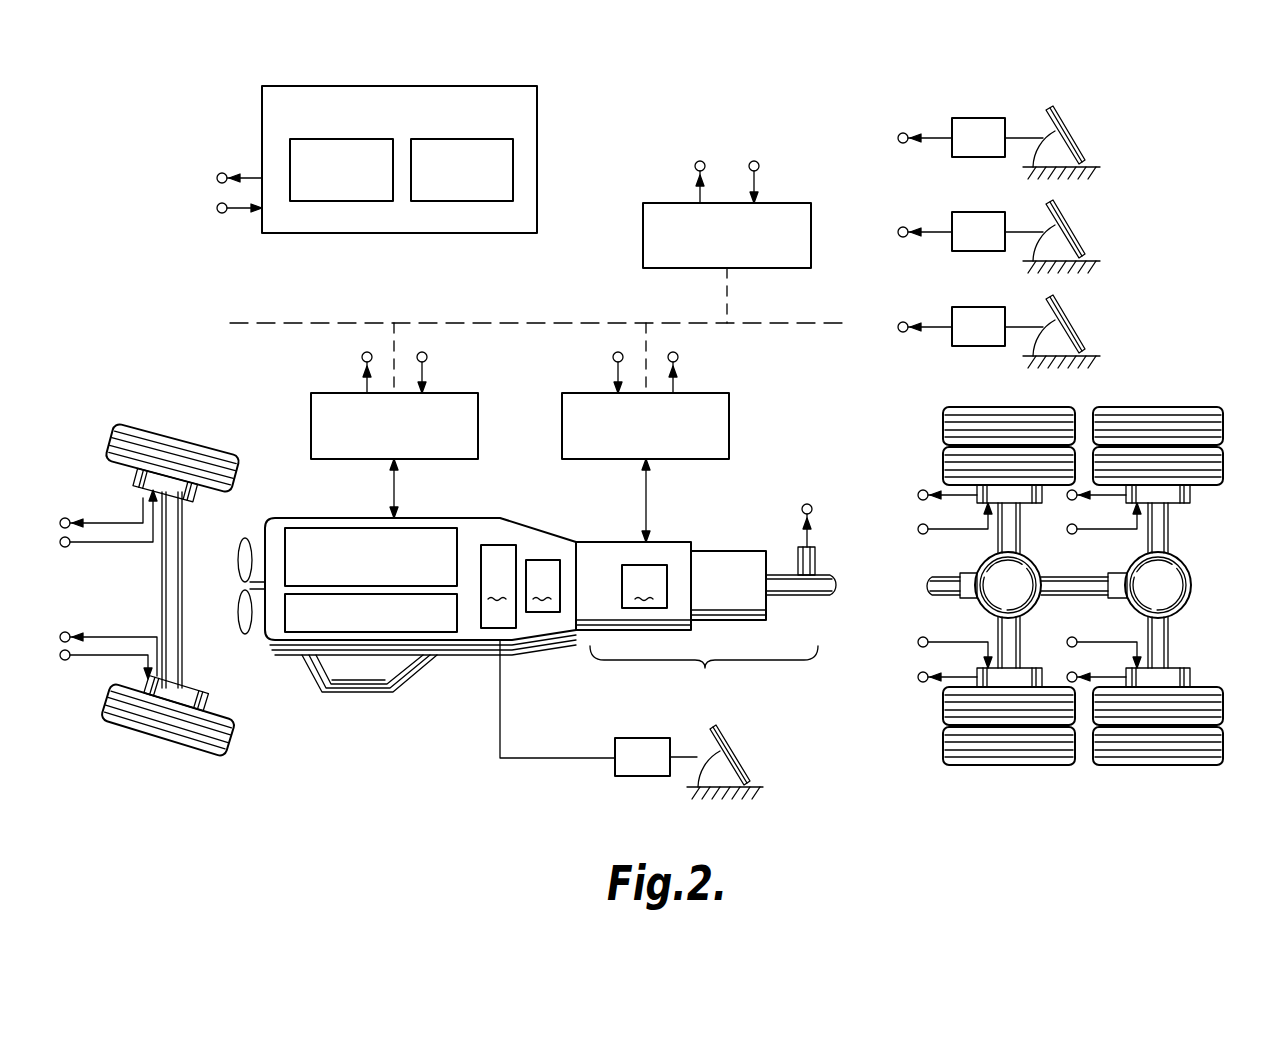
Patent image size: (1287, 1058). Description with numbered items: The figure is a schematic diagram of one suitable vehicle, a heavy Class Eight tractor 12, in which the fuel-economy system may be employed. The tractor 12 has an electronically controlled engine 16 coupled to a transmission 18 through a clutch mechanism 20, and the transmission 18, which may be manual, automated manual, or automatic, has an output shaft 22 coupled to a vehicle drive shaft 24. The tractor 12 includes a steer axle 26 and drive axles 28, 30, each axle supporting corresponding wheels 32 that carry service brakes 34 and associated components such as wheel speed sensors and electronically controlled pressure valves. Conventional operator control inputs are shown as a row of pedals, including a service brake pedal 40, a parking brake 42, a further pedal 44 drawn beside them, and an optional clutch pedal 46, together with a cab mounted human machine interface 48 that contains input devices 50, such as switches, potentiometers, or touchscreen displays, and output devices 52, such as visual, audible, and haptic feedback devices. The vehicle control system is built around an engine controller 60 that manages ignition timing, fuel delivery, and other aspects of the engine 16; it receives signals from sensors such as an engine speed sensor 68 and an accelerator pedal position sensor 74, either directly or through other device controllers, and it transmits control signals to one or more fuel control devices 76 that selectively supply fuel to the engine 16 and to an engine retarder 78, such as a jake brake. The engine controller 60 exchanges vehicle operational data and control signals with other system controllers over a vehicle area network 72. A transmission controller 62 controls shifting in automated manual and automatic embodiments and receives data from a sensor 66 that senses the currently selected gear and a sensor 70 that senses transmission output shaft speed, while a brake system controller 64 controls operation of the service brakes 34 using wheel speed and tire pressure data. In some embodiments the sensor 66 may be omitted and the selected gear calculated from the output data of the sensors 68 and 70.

The tractor 12 is at (383, 740).
The engine 16 is at (428, 518).
The transmission 18 is at (697, 620).
The clutch mechanism 20 is at (498, 586).
The output shaft 22 is at (806, 596).
The vehicle drive shaft 24 is at (940, 595).
The steer axle 26 is at (162, 576).
The drive axle 28 is at (1022, 633).
The drive axle 30 is at (1170, 633).
The wheels 32 is at (112, 430).
The service brakes 34 is at (192, 510).
The service brake pedal 40 is at (1068, 128).
The parking brake 42 is at (1068, 222).
The clutch pedal 44 is at (1068, 317).
The clutch pedal 46 is at (738, 748).
The human machine interface 48 is at (361, 233).
The input devices 50 is at (290, 150).
The output devices 52 is at (513, 150).
The engine controller 60 is at (311, 428).
The transmission controller 62 is at (562, 428).
The brake system controller 64 is at (643, 232).
The sensor 66 is at (644, 586).
The engine speed sensor 68 is at (543, 586).
The sensor 70 is at (815, 558).
The vehicle area network 72 is at (290, 323).
The accelerator pedal position sensor 74 is at (960, 118).
The fuel control device 76 is at (315, 532).
The engine retarder 78 is at (425, 630).